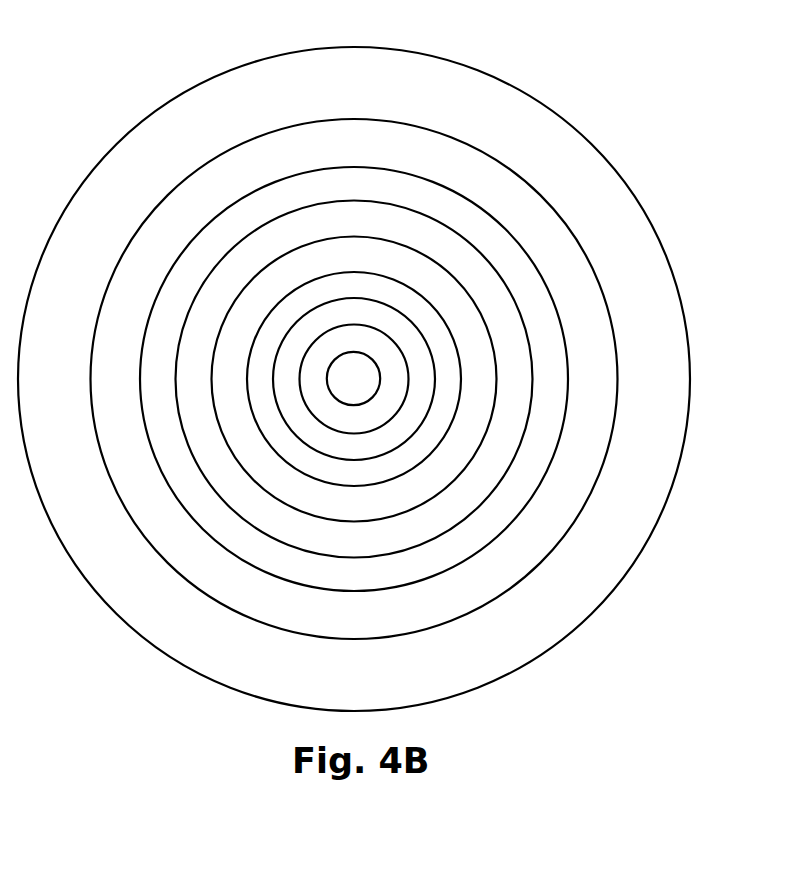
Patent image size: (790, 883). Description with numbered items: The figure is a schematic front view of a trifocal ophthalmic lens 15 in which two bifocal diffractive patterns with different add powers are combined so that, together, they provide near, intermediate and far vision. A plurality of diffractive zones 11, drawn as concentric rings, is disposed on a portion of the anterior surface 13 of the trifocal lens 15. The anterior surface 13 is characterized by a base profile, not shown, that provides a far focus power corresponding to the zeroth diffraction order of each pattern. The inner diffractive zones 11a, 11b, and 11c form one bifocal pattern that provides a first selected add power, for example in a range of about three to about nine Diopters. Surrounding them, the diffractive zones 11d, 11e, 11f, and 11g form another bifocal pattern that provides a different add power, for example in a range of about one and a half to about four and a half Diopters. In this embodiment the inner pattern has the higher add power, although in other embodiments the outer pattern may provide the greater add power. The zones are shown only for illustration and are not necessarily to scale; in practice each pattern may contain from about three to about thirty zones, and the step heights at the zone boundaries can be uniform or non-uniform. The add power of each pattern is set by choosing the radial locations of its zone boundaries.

The diffractive zones 11 is at (212, 303).
The inner diffractive zone 11a is at (353, 367).
The inner diffractive zone 11b is at (354, 366).
The inner diffractive zone 11c is at (354, 366).
The diffractive zone 11d is at (354, 364).
The diffractive zone 11e is at (354, 365).
The diffractive zone 11f is at (354, 364).
The diffractive zone 11g is at (354, 362).
The anterior surface 13 is at (286, 98).
The trifocal lens 15 is at (519, 59).